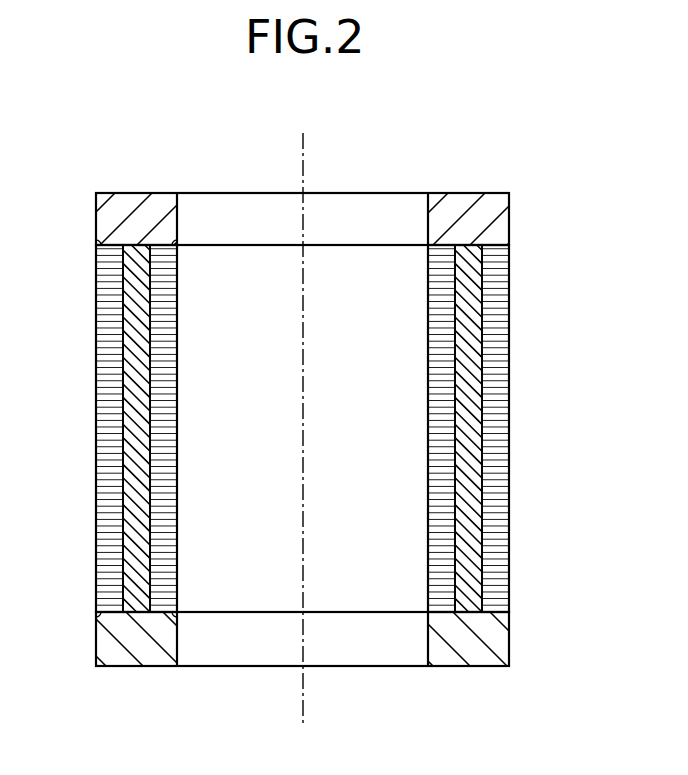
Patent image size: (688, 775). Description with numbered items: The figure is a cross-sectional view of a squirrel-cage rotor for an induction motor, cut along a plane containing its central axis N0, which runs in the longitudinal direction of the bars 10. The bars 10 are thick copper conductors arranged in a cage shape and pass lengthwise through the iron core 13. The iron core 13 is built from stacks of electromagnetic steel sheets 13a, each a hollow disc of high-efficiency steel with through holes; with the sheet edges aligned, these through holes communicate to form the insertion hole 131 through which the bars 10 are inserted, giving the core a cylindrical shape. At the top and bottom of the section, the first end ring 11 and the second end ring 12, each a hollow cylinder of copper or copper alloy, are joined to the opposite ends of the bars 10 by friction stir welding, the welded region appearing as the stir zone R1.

The bars 10 is at (358, 429).
The first end ring 11 is at (510, 223).
The second end ring 12 is at (510, 641).
The iron core 13 is at (358, 428).
The insertion hole 131 is at (473, 477).
The electromagnetic steel sheet 13a is at (493, 537).
The central axis N0 is at (303, 160).
The stir zone R1 is at (101, 219).